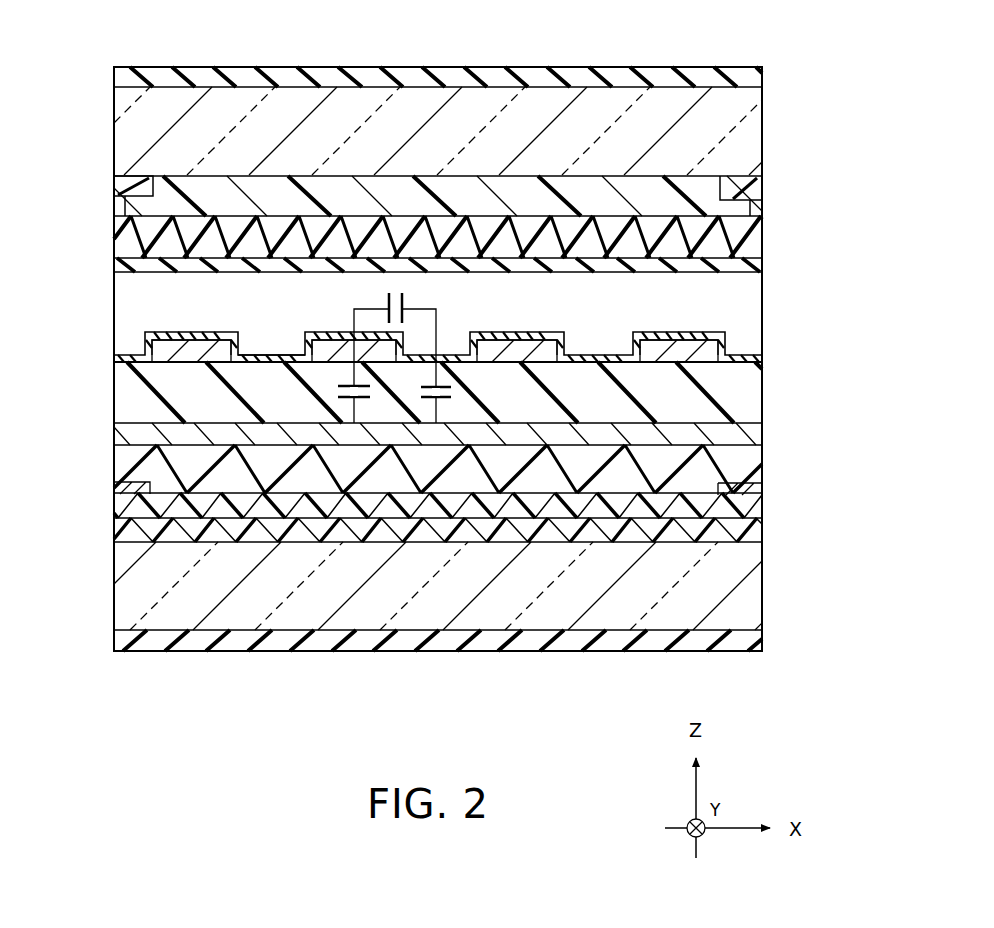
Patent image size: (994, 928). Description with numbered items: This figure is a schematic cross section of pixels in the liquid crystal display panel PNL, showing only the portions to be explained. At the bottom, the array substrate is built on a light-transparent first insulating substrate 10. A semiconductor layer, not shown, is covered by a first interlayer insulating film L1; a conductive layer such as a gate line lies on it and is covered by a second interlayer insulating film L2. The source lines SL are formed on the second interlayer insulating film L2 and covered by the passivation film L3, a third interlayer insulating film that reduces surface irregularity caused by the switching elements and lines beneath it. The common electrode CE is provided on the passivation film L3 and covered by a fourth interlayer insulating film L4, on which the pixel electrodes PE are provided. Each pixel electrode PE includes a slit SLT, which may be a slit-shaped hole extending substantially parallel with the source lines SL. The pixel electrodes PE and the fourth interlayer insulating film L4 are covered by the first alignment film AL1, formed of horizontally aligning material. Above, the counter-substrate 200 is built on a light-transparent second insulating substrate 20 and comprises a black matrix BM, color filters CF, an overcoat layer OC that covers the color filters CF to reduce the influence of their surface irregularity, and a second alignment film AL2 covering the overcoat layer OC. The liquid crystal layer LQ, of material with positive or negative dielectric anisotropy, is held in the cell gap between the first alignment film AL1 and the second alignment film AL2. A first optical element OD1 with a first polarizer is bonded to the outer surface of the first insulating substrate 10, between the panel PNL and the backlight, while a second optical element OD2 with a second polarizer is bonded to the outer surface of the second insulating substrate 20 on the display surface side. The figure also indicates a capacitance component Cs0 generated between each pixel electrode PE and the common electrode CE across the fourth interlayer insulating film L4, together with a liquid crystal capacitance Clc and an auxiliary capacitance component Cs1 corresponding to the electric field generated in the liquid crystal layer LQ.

The liquid crystal display panel PNL is at (772, 71).
The counter-substrate 200 is at (96, 144).
The second optical element OD2 is at (122, 78).
The second insulating substrate 20 is at (748, 133).
The color filters CF is at (583, 190).
The black matrix BM is at (118, 186).
The overcoat layer OC is at (122, 238).
The second alignment film AL2 is at (765, 270).
The liquid crystal layer LQ is at (748, 303).
The first alignment film AL1 is at (138, 352).
The pixel electrodes PE is at (193, 340).
The slit SLT is at (568, 345).
The fourth interlayer insulating film L4 is at (122, 370).
The liquid crystal capacitance Clc is at (386, 302).
The capacitance component Cs0 is at (347, 378).
The auxiliary capacitance component Cs1 is at (443, 378).
The common electrode CE is at (755, 431).
The passivation film L3 is at (122, 455).
The source lines SL is at (116, 486).
The second interlayer insulating film L2 is at (120, 507).
The first interlayer insulating film L1 is at (120, 528).
The first insulating substrate 10 is at (745, 604).
The first optical element OD1 is at (755, 640).